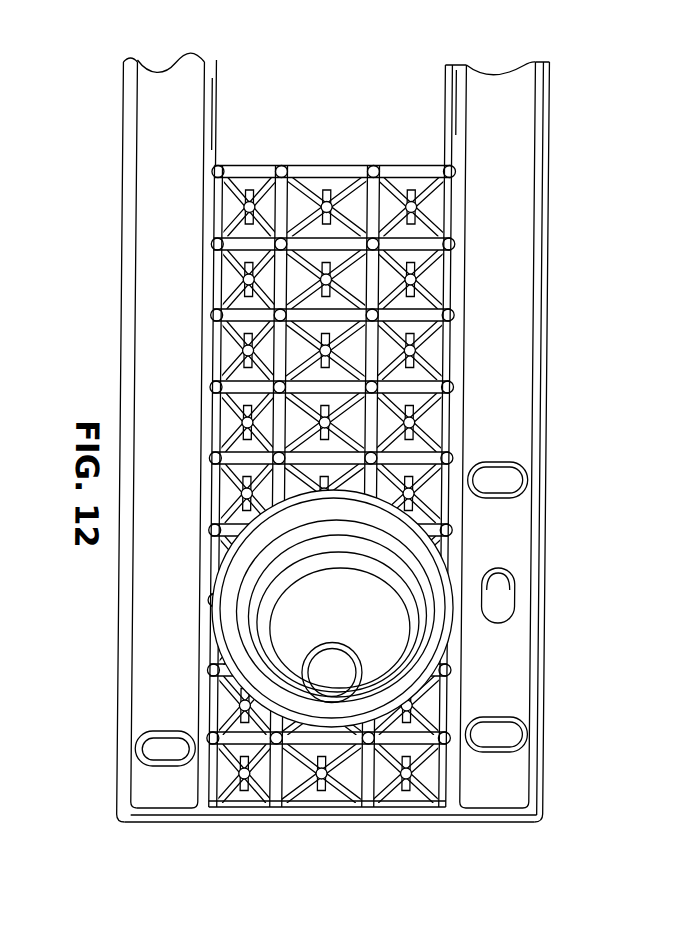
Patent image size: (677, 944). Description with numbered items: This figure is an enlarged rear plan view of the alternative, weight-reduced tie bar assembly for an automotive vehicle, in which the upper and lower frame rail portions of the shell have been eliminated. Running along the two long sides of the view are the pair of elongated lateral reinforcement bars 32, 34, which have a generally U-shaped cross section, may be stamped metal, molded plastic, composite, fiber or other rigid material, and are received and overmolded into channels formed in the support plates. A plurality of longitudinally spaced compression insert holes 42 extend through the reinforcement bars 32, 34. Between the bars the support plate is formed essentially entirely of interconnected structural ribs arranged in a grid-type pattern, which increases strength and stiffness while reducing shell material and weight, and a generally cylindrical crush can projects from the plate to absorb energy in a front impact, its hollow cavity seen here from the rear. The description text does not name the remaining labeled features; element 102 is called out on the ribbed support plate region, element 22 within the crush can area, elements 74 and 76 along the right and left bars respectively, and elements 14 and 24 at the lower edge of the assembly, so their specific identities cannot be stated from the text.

The pallet base 14 is at (490, 827).
The conical drain opening 22 is at (332, 608).
The bottom edge 24 is at (347, 824).
The lateral reinforcement bar 32 is at (449, 77).
The lateral reinforcement bar 34 is at (163, 142).
The compression insert hole 42 is at (527, 125).
The slots 74 is at (529, 242).
The outer edge wall 76 is at (129, 297).
The lattice deck 102 is at (363, 165).